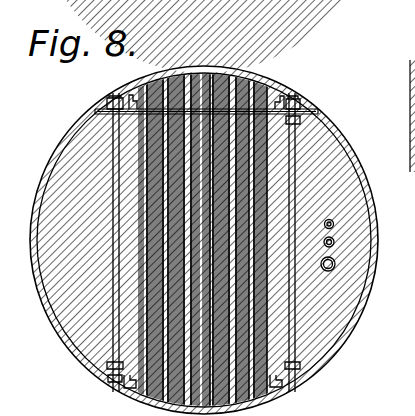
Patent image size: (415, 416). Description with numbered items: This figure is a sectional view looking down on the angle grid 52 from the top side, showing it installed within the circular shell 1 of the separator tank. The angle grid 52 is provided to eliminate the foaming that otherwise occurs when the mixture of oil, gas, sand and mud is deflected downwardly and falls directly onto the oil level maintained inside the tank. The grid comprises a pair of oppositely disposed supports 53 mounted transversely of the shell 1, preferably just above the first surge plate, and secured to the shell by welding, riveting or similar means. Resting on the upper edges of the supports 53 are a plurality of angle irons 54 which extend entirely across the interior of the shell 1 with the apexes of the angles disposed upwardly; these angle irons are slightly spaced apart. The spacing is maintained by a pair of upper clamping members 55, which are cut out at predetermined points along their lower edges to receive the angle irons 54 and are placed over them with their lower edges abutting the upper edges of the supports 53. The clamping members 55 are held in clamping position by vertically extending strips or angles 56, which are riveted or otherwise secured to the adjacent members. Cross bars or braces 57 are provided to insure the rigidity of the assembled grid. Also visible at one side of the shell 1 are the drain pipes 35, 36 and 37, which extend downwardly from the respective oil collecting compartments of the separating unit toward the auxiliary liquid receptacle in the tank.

The shell 1 is at (338, 128).
The drain pipe 35 is at (336, 264).
The drain pipe 36 is at (335, 241).
The drain pipe 37 is at (334, 222).
The angle grid 52 is at (250, 100).
The supports 53 is at (100, 114).
The angle irons 54 is at (148, 285).
The upper clamping members 55 is at (311, 118).
The vertically extending strips or angles 56 is at (136, 95).
The cross bars or braces 57 is at (113, 215).